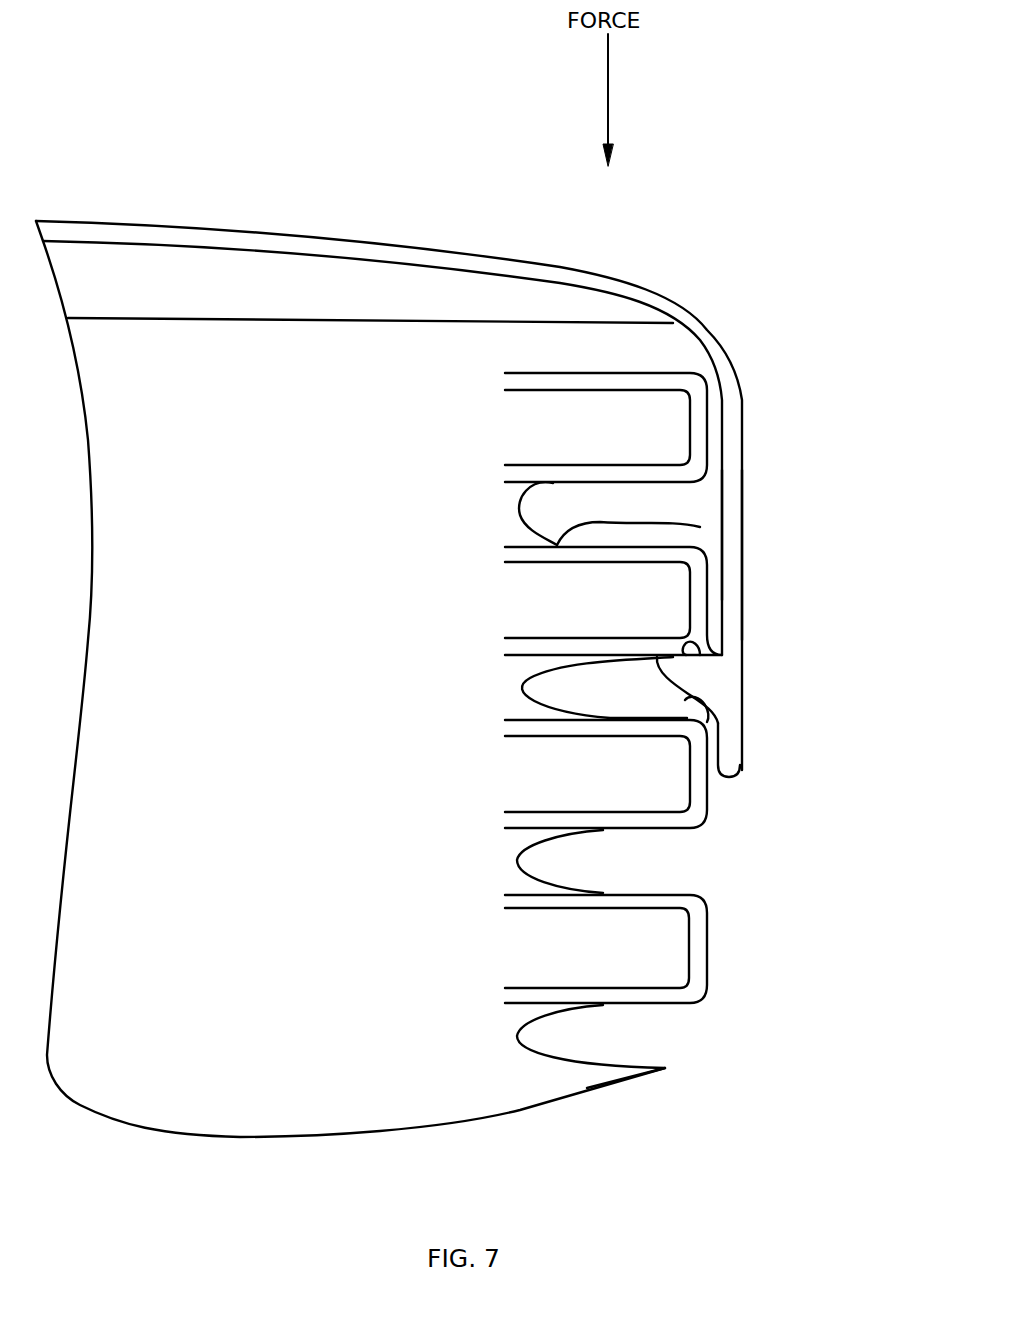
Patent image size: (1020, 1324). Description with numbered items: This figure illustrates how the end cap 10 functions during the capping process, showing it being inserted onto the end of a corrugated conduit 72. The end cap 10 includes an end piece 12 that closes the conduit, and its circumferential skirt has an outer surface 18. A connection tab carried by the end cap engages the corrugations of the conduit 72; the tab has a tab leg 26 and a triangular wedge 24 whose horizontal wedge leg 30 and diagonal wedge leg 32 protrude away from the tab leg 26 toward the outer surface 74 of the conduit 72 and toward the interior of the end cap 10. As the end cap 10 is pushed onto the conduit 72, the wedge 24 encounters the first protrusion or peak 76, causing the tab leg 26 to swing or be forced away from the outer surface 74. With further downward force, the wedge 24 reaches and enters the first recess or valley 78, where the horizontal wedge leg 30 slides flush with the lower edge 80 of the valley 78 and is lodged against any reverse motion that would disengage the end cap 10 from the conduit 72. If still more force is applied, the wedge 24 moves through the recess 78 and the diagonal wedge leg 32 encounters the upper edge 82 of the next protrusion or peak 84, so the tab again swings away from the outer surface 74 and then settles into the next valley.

The end cap 10 is at (703, 287).
The end piece 12 is at (308, 245).
The outer surface 18 is at (740, 772).
The triangular wedge 24 is at (700, 672).
The tab leg 26 is at (743, 542).
The horizontal wedge leg 30 is at (690, 642).
The diagonal wedge leg 32 is at (740, 722).
The conduit 72 is at (711, 936).
The outer surface 74 is at (707, 972).
The first protrusion or peak 76 is at (710, 410).
The first recess or valley 78 is at (705, 517).
The lower edge 80 is at (553, 483).
The upper edge 82 is at (700, 527).
The next protrusion or peak 84 is at (708, 603).